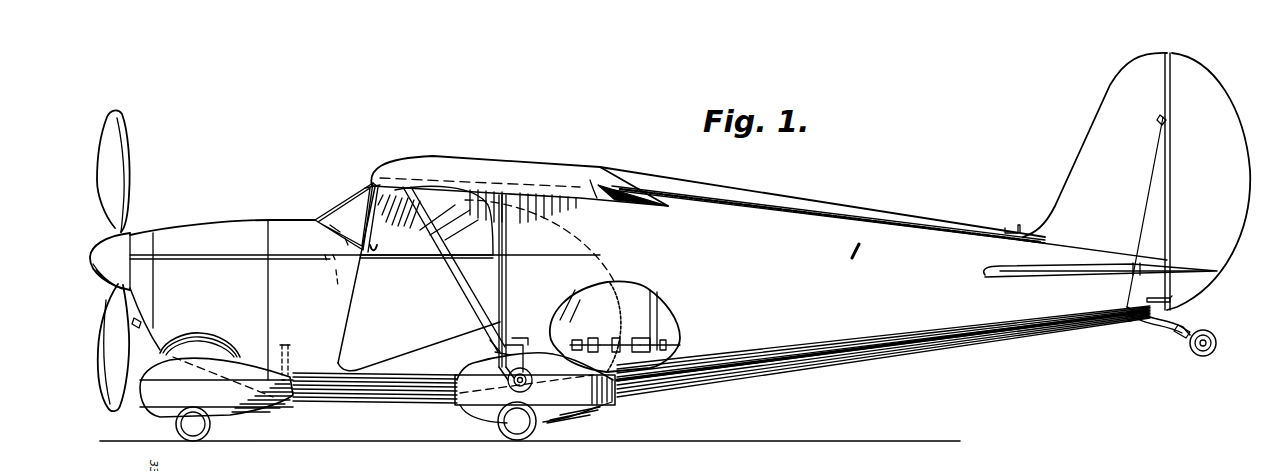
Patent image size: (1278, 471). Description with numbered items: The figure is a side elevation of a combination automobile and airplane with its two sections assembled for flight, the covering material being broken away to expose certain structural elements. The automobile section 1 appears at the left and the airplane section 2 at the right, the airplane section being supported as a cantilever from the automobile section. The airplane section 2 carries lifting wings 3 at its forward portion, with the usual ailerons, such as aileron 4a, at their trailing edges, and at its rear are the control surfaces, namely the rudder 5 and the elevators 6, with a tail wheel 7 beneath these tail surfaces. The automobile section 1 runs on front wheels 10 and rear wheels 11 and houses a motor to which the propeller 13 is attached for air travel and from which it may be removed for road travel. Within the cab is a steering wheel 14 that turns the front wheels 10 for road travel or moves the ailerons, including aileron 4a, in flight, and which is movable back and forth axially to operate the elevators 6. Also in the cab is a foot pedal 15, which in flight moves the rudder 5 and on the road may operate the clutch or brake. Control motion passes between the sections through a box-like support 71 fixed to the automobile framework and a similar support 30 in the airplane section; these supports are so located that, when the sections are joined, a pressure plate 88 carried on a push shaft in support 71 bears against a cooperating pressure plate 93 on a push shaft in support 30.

The automobile section 1 is at (222, 198).
The airplane section 2 is at (800, 203).
The lifting wings 3 is at (458, 163).
The aileron 4a is at (622, 198).
The rudder 5 is at (1224, 96).
The elevators 6 is at (1195, 266).
The tail wheel 7 is at (1194, 352).
The front wheels 10 is at (245, 430).
The rear wheels 11 is at (483, 426).
The propeller 13 is at (120, 156).
The steering wheel 14 is at (378, 250).
The foot pedal 15 is at (287, 347).
The support 30 is at (642, 338).
The box-like support 71 is at (585, 340).
The pressure plate 88 is at (615, 326).
The pressure plate 93 is at (618, 338).